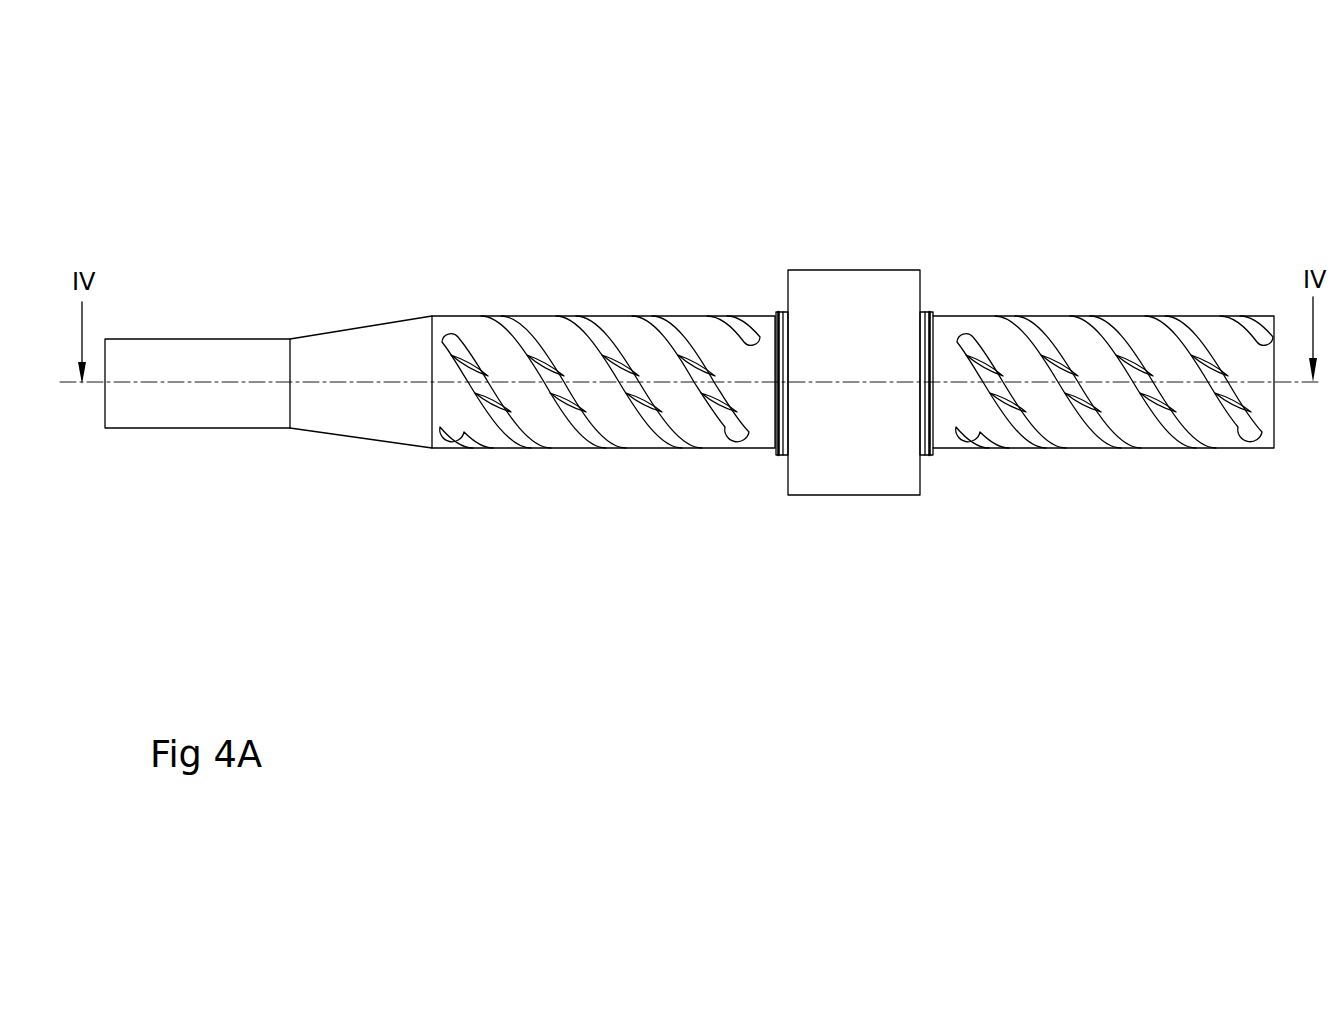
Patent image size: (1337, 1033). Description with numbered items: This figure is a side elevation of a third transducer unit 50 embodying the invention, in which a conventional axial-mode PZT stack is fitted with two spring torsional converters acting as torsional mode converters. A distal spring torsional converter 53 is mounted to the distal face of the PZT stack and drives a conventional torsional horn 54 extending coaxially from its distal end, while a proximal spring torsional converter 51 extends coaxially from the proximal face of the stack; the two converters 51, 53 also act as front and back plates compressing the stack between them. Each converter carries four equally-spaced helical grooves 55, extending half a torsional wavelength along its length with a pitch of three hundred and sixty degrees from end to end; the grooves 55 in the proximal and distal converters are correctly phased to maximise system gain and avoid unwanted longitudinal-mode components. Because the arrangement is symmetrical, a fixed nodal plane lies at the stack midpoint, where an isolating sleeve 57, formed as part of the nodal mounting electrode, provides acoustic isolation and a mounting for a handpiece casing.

The third transducer unit 50 is at (940, 170).
The proximal spring torsional converter 51 is at (1075, 337).
The distal spring torsional converter 53 is at (555, 335).
The torsional horn 54 is at (220, 337).
The helical grooves 55 is at (745, 428).
The isolating sleeve 57 is at (860, 302).